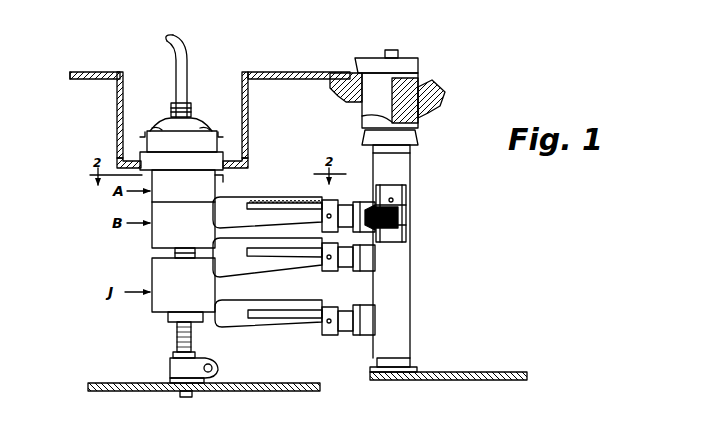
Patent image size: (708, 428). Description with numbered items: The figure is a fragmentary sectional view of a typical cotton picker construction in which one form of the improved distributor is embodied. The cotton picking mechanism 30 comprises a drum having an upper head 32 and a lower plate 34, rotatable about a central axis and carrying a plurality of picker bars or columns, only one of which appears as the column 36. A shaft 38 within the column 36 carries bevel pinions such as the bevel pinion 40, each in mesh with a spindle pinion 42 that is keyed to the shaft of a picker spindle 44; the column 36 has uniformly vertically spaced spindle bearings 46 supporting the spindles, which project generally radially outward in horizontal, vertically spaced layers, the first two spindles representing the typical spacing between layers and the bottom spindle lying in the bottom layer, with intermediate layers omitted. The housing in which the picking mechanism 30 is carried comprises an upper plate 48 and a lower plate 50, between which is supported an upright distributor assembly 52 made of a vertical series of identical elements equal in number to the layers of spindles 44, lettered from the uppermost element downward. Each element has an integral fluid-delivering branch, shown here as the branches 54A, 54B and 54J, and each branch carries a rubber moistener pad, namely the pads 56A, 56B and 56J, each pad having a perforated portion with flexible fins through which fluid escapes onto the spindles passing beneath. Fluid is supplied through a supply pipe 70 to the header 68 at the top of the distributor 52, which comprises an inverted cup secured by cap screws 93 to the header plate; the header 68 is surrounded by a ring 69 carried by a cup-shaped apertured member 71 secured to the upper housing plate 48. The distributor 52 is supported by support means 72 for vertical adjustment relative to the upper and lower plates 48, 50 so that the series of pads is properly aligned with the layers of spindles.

The cotton picking mechanism 30 is at (432, 318).
The upper head 32 is at (432, 92).
The lower plate 34 is at (460, 382).
The column 36 is at (411, 171).
The shaft 38 is at (391, 50).
The bevel pinion 40 is at (407, 214).
The spindle pinion 42 is at (396, 226).
The picker spindle 44 is at (333, 207).
The spindle bearing 46 is at (371, 195).
The upper plate 48 is at (303, 72).
The lower plate 50 is at (270, 392).
The distributor assembly 52 is at (112, 107).
The branch 54A is at (262, 197).
The branch 54B is at (243, 235).
The branch 54J is at (238, 298).
The moistener pad 56A is at (288, 200).
The moistener pad 56B is at (310, 250).
The moistener pad 56J is at (270, 312).
The header 68 is at (192, 116).
The ring 69 is at (140, 160).
The supply pipe 70 is at (184, 50).
The cup-shaped apertured member 71 is at (114, 91).
The support means 72 is at (168, 359).
The cap screws 93 is at (157, 128).